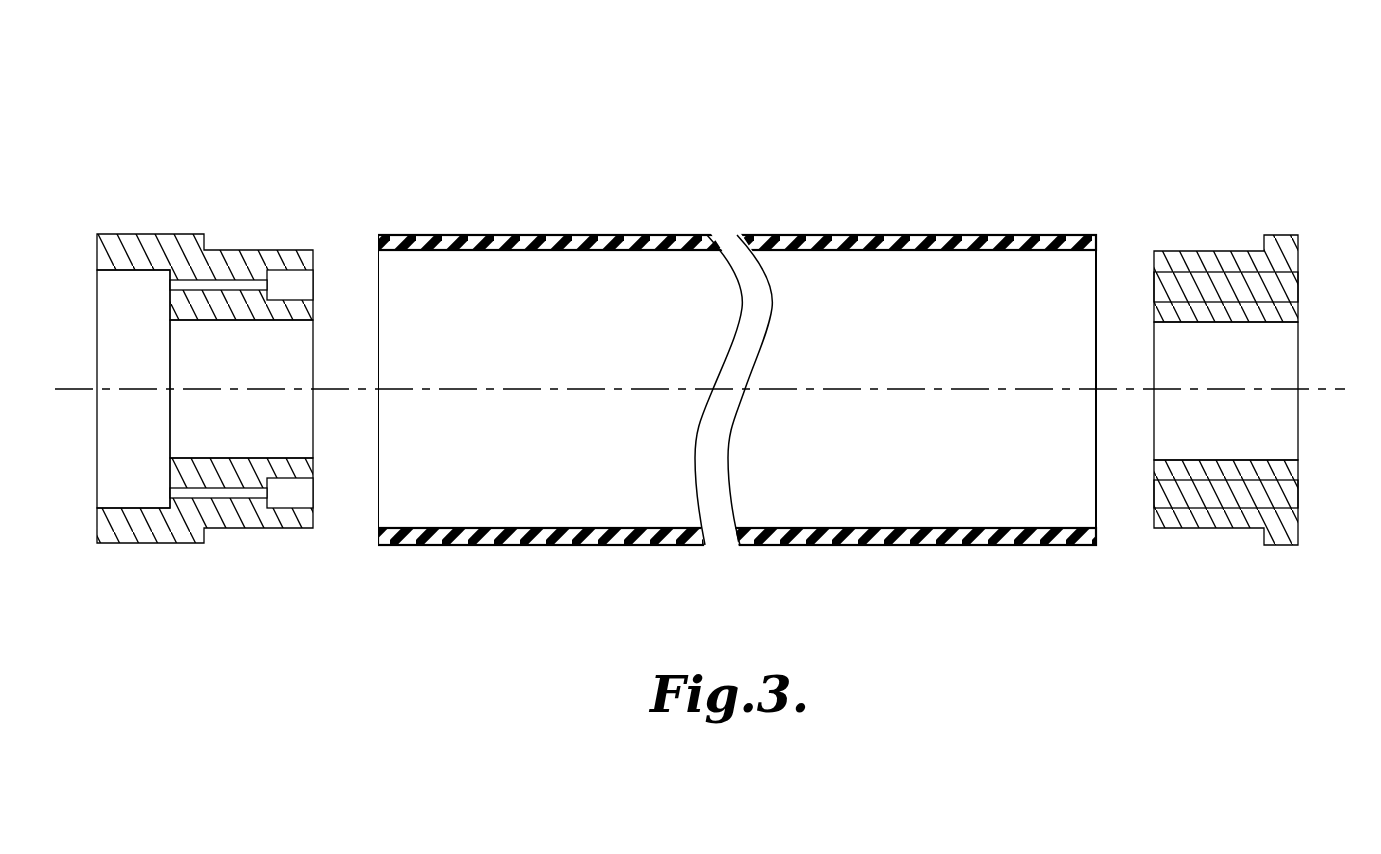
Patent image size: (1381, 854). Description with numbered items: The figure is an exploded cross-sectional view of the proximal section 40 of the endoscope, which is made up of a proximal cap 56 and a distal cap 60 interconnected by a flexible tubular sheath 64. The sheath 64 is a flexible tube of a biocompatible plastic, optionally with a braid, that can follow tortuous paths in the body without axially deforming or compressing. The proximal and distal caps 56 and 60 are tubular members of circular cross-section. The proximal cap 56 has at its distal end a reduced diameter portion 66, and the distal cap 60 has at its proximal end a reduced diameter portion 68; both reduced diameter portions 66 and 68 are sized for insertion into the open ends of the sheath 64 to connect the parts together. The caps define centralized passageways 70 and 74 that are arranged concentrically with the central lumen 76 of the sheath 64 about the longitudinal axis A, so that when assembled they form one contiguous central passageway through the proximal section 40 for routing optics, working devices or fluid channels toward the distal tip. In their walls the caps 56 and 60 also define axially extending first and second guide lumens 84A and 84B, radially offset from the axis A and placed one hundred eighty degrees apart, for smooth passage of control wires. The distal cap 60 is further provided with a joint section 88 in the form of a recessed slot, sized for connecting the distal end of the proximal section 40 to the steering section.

The proximal section 40 is at (327, 120).
The proximal cap 56 is at (1305, 222).
The distal cap 60 is at (118, 208).
The flexible tubular sheath 64 is at (575, 235).
The reduced diameter portion 66 is at (1185, 251).
The reduced diameter portion 68 is at (225, 250).
The centralized passageway 70 is at (1230, 372).
The centralized passageway 74 is at (246, 377).
The central lumen 76 is at (863, 356).
The first guide lumen 84A is at (185, 283).
The second guide lumen 84B is at (227, 492).
The joint section 88 is at (112, 339).
The longitudinal axis A is at (1322, 389).